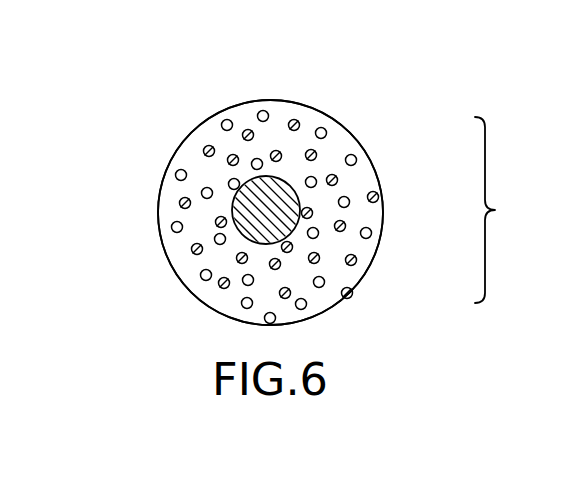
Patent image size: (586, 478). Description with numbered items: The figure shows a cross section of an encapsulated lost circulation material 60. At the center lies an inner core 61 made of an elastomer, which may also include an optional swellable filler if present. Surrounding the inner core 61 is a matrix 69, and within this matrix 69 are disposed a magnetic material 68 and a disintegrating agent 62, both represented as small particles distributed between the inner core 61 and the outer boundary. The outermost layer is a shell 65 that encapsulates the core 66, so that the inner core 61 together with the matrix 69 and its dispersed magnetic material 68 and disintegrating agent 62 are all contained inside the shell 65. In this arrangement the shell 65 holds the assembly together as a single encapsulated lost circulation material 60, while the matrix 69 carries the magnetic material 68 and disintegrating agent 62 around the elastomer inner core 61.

The encapsulated lost circulation material 60 is at (124, 145).
The shell 65 is at (270, 100).
The inner core 61 is at (272, 225).
The matrix 69 is at (357, 182).
The magnetic material 68 is at (356, 160).
The disintegrating agent 62 is at (290, 290).
The core 66 is at (505, 210).